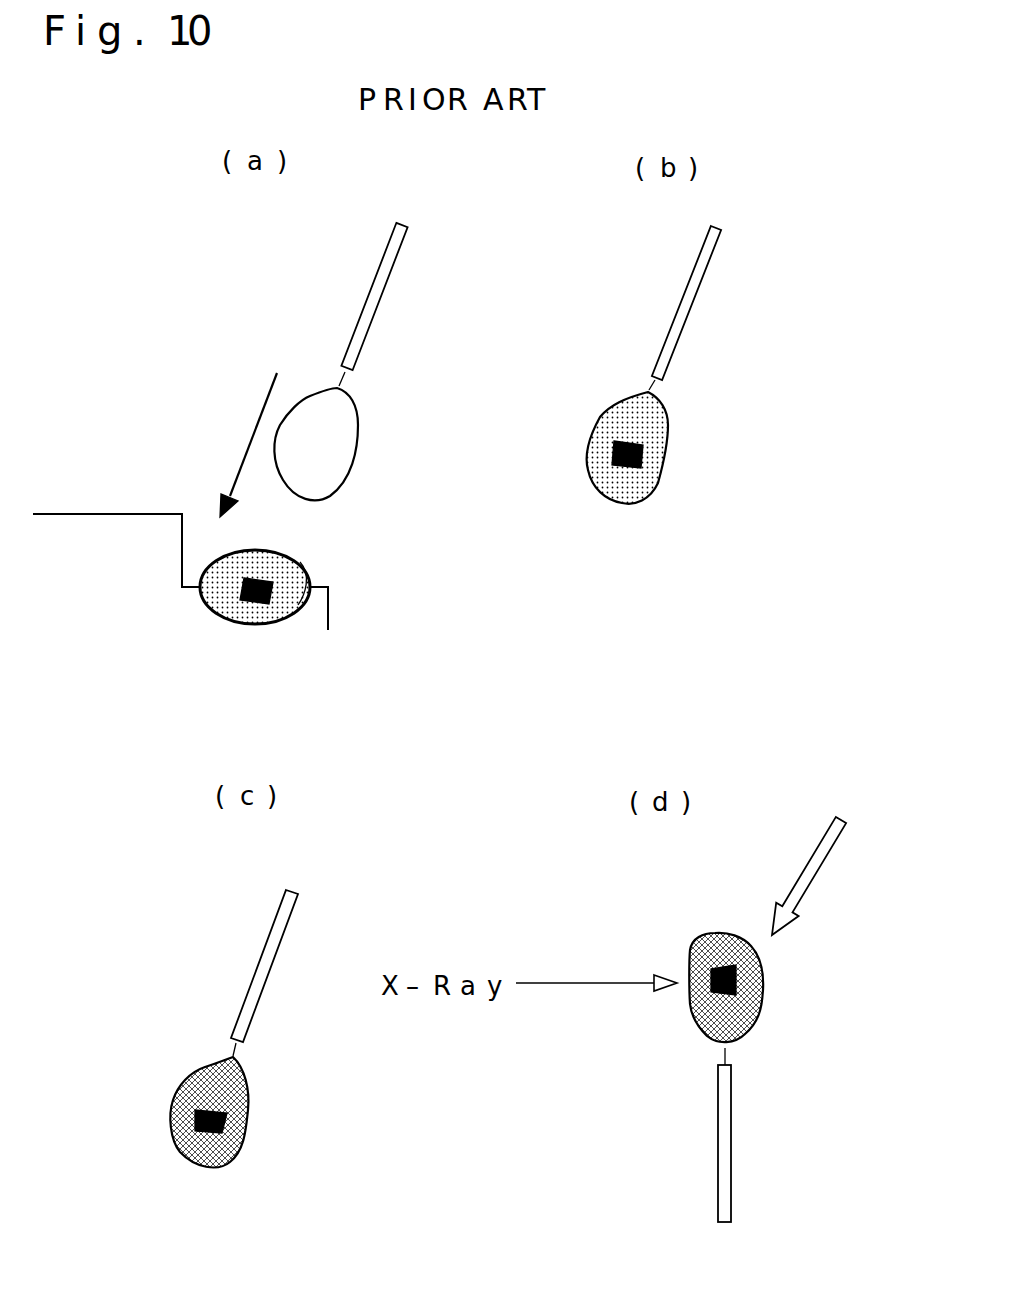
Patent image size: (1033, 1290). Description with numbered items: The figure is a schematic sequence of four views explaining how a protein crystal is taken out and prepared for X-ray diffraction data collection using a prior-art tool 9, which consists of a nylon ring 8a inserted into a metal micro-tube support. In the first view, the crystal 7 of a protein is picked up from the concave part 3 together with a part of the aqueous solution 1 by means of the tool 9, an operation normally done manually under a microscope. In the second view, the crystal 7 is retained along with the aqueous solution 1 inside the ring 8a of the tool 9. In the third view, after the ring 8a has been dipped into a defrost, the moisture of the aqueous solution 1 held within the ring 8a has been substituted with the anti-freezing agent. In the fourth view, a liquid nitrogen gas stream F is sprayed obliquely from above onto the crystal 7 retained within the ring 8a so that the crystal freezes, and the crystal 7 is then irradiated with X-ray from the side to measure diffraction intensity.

The aqueous solution 1 is at (225, 598).
The concave part 3 is at (298, 563).
The crystal 7 is at (258, 603).
The ring 8a is at (357, 440).
The tool 9 is at (310, 318).
The liquid nitrogen gas stream F is at (809, 874).